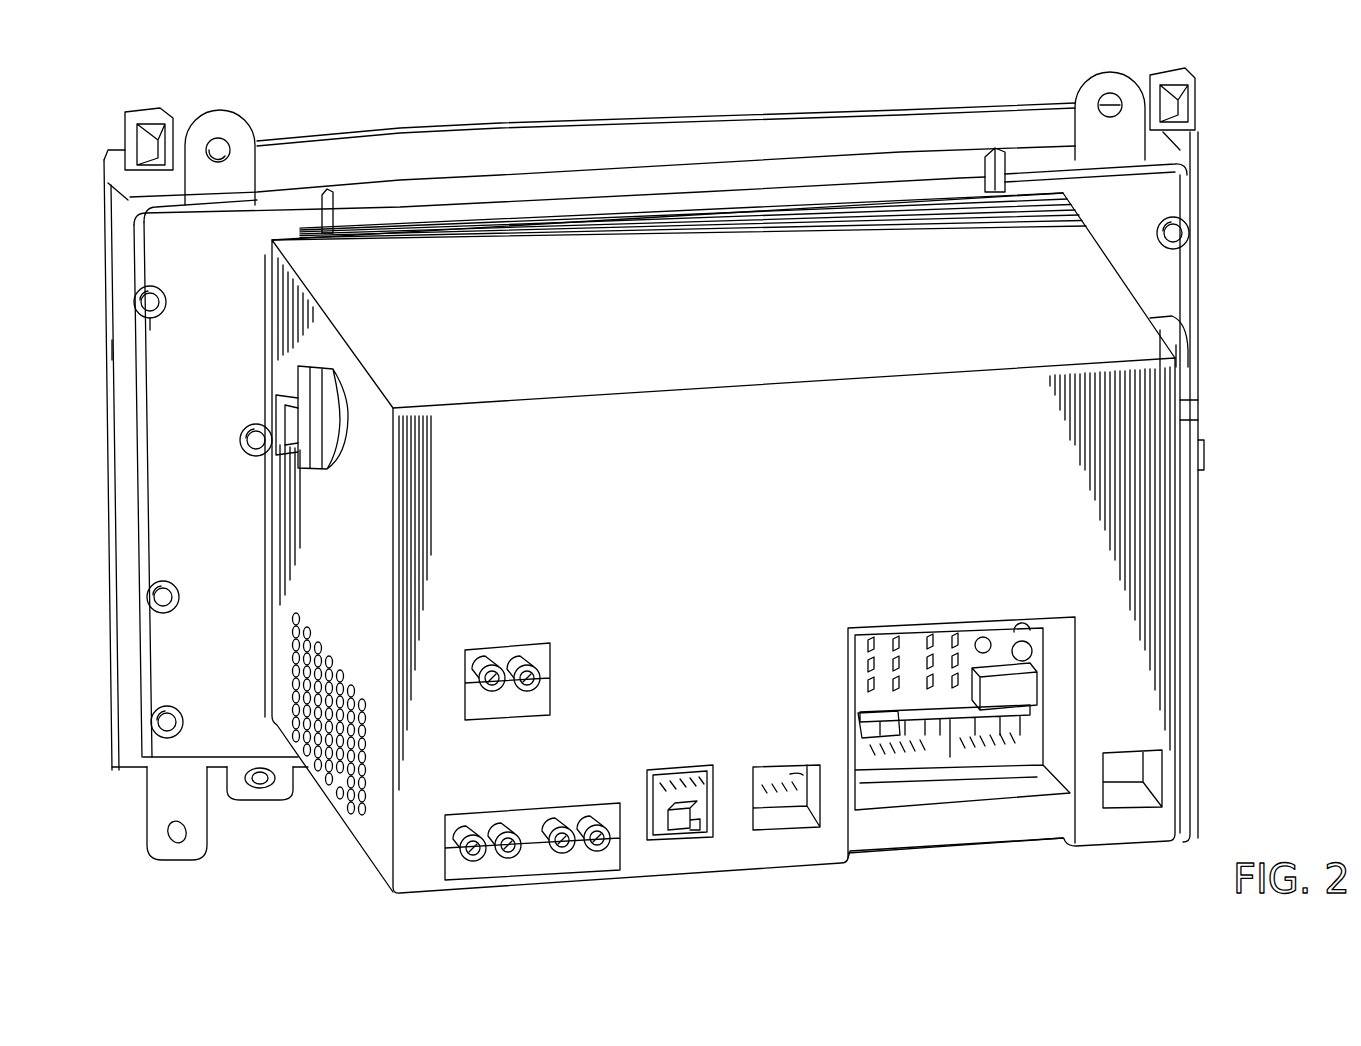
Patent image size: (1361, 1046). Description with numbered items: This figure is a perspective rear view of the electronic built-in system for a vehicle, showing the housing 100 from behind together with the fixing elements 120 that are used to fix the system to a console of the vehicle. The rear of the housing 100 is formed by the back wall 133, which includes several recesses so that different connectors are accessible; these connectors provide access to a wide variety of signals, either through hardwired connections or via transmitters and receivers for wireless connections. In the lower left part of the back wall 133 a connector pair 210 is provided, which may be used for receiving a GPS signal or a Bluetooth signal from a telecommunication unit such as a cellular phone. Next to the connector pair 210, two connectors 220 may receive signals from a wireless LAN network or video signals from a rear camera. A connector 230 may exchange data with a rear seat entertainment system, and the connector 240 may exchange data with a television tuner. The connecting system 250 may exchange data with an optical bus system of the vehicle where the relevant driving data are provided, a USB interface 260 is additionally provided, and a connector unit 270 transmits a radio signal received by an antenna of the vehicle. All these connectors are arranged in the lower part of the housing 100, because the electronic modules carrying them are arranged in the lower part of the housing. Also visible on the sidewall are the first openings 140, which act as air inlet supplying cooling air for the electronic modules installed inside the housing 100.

The housing 100 is at (1130, 558).
The fixing elements 120 is at (303, 416).
The back wall 133 is at (1107, 482).
The first openings 140 is at (342, 782).
The connector pair 210 is at (473, 855).
The connectors 220 is at (565, 848).
The connector 230 is at (672, 780).
The connector 240 is at (775, 777).
The connecting system 250 is at (962, 787).
The USB interface 260 is at (1133, 793).
The connector unit 270 is at (492, 662).